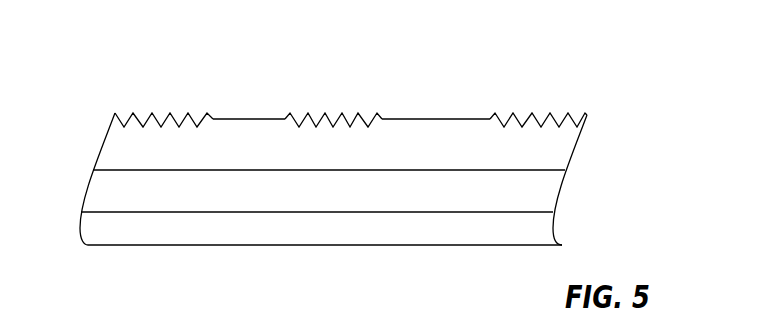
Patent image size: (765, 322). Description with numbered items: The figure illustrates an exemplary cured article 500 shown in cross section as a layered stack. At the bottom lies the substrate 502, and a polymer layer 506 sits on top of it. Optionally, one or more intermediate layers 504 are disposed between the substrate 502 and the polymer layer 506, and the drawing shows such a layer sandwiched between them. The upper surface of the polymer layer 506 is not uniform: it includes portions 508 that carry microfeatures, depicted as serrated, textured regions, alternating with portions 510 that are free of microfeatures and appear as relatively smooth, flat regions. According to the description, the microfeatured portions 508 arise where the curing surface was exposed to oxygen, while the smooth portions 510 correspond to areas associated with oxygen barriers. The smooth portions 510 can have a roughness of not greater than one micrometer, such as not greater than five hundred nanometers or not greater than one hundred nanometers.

The article 500 is at (153, 58).
The substrate 502 is at (545, 230).
The intermediate layer 504 is at (545, 200).
The polymer layer 506 is at (563, 153).
The portions that include microfeatures 508 is at (130, 103).
The portions free of microfeatures 510 is at (253, 117).